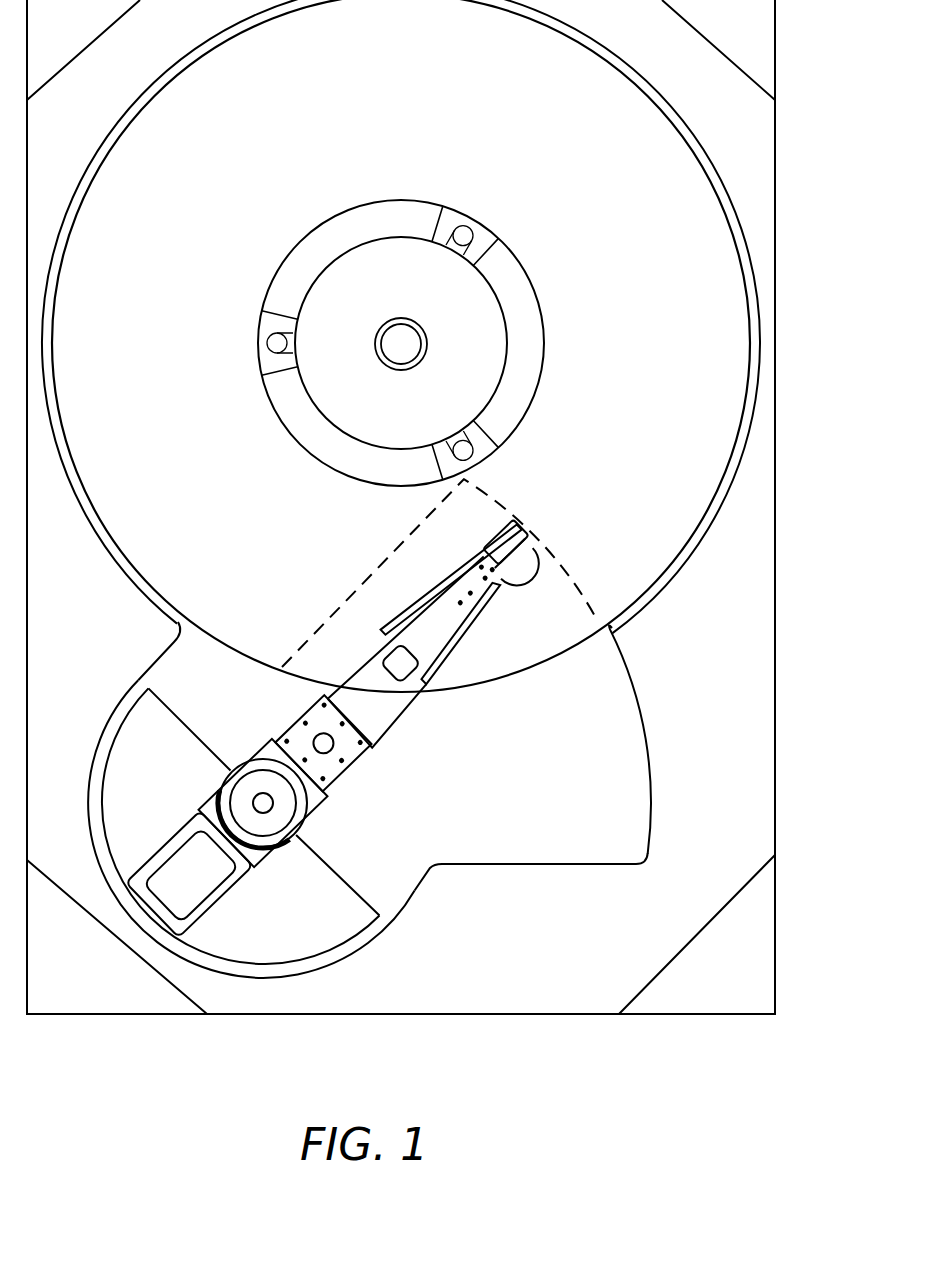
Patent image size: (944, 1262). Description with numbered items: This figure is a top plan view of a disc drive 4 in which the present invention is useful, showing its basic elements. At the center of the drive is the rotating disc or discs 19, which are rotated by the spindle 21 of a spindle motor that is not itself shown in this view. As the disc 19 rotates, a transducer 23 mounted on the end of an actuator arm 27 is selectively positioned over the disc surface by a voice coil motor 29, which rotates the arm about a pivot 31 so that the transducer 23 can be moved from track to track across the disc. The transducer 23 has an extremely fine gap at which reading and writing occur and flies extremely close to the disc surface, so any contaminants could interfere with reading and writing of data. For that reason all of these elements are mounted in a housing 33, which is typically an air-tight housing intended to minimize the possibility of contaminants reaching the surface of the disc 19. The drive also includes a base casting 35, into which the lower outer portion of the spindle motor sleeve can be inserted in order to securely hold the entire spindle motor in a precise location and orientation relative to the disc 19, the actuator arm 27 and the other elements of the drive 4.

The disk drive 4 is at (272, 993).
The rotating disc 19 is at (183, 393).
The spindle 21 is at (386, 326).
The transducer 23 is at (530, 537).
The actuator arm 27 is at (362, 677).
The voice coil motor 29 is at (266, 808).
The pivot 31 is at (283, 807).
The housing 33 is at (774, 100).
The base casting 35 is at (713, 873).